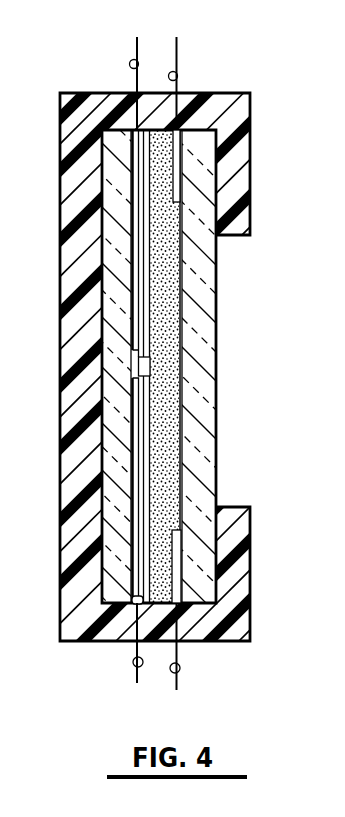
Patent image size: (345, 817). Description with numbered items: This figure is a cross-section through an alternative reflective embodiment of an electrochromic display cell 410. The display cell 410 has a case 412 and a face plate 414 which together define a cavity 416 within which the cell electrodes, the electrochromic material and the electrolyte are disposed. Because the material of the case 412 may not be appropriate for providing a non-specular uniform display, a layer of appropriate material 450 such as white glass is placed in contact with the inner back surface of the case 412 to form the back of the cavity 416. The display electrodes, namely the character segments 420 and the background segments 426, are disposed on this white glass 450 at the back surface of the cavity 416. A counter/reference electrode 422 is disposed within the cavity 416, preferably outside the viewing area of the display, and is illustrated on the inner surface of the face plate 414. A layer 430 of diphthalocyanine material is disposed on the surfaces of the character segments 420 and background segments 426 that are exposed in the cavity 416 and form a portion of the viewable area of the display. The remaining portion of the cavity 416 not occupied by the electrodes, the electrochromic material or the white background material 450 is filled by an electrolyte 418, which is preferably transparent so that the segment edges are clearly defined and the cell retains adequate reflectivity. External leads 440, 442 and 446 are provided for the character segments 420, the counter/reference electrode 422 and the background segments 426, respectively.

The display cell 410 is at (172, 373).
The case 412 is at (234, 618).
The face plate 414 is at (188, 485).
The cavity 416 is at (157, 363).
The electrolyte 418 is at (170, 402).
The character segments 420 is at (132, 207).
The counter/reference electrode 422 is at (175, 162).
The background segments 426 is at (138, 604).
The layer of diphthalocyanine material 430 is at (148, 278).
The external lead 440 is at (138, 67).
The external lead 442 is at (181, 77).
The external lead 446 is at (134, 658).
The layer of appropriate material (white glass) 450 is at (120, 258).